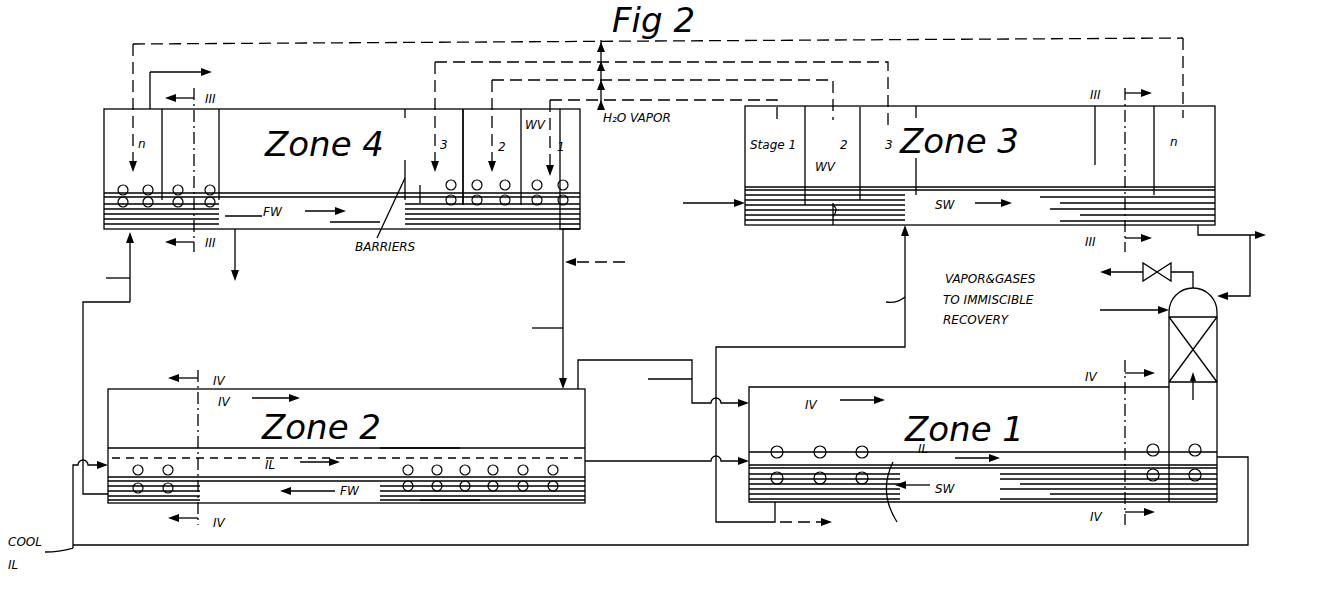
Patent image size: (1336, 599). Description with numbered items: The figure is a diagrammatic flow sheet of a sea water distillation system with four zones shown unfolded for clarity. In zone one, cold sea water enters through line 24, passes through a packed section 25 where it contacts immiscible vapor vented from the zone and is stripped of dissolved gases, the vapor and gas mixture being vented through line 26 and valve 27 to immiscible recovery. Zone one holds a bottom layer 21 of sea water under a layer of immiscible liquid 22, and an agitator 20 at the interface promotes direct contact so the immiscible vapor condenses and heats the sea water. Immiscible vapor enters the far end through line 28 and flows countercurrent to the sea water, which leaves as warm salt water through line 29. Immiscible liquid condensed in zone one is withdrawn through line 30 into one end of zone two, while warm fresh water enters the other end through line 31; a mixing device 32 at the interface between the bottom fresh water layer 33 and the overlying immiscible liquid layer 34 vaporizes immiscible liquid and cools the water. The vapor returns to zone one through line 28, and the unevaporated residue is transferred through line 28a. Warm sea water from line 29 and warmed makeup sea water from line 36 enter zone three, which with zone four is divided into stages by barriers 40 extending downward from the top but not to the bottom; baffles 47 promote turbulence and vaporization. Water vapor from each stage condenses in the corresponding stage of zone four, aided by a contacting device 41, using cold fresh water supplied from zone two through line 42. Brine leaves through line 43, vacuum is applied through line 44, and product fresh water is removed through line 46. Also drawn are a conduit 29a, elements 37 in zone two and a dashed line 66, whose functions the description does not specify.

The agitator 20 is at (885, 448).
The bottom layer of sea water 21 is at (1000, 487).
The layer of immiscible liquid 22 is at (1040, 455).
The line 24 is at (1126, 293).
The packed section 25 is at (1220, 346).
The line 26 is at (1190, 283).
The valve 27 is at (1150, 271).
The line 28 is at (588, 362).
The line 28a is at (596, 461).
The line 29 is at (794, 347).
The conduit 29a is at (827, 526).
The line 30 is at (140, 548).
The line 31 is at (563, 306).
The mixing device 32 is at (475, 468).
The bottom layer of liquid aqueous phase 33 is at (448, 495).
The overlying layer of immiscible liquid 34 is at (385, 460).
The line 36 is at (718, 208).
The tubes 37 is at (443, 466).
The barrier 40 is at (463, 121).
The contacting device 41 is at (577, 186).
The line 42 is at (83, 325).
The line 43 is at (1228, 234).
The line 44 is at (153, 70).
The line 46 is at (238, 250).
The baffles 47 is at (837, 214).
The conduit 66 is at (618, 260).